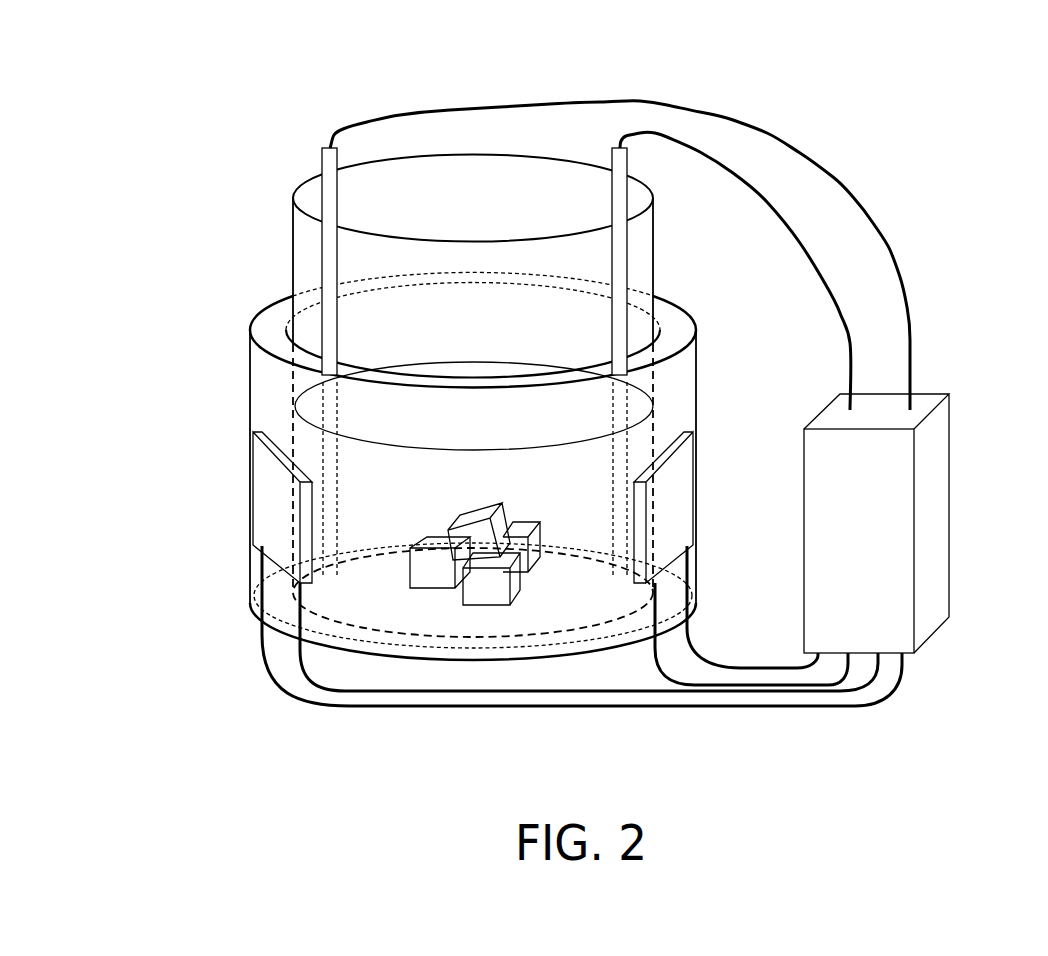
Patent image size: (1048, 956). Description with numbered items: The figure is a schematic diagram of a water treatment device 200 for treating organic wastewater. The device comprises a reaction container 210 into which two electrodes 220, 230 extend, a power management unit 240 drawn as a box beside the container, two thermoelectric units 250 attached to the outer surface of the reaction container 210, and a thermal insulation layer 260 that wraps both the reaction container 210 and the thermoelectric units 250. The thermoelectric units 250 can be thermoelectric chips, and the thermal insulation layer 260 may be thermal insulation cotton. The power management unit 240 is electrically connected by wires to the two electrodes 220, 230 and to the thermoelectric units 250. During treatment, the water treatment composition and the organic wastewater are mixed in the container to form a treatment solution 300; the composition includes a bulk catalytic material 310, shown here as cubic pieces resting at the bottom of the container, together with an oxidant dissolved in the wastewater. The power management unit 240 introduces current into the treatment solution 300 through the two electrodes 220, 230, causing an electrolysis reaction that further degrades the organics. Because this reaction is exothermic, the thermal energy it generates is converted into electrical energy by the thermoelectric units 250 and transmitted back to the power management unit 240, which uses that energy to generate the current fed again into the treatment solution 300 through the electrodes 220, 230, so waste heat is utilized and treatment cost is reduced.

The water treatment device 200 is at (140, 63).
The reaction container 210 is at (653, 243).
The electrode 220 is at (622, 165).
The electrode 230 is at (332, 167).
The power management unit 240 is at (940, 520).
The thermoelectric unit 250 is at (267, 493).
The thermal insulation layer 260 is at (267, 373).
The treatment solution 300 is at (580, 458).
The bulk catalytic material 310 is at (487, 592).